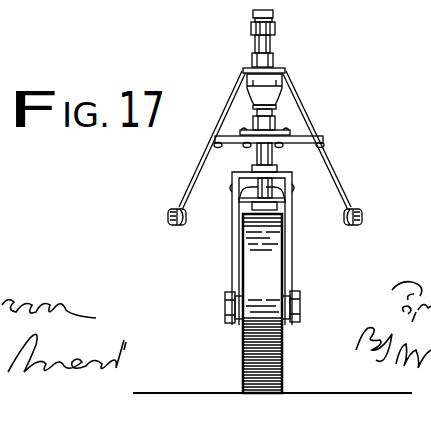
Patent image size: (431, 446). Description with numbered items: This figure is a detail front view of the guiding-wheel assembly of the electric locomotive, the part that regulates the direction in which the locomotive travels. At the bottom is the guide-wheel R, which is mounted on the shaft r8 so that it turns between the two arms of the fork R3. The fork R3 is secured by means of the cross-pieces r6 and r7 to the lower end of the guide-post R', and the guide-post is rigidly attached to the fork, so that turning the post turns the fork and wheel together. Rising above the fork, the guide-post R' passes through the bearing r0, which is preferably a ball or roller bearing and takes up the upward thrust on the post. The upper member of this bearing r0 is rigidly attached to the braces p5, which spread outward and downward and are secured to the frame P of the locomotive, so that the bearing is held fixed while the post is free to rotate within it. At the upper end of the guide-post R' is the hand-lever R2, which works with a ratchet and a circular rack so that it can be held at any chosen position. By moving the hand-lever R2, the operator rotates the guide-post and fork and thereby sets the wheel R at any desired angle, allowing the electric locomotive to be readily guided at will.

The hand-lever R2 is at (276, 27).
The guide-post R' is at (292, 51).
The bearing r0 is at (284, 82).
The cross-piece r7 is at (292, 173).
The braces p5 is at (356, 160).
The frame P is at (167, 216).
The fork R3 is at (232, 254).
The cross-piece r6 is at (281, 194).
The shaft r8 is at (298, 294).
The guide-wheel R is at (221, 303).